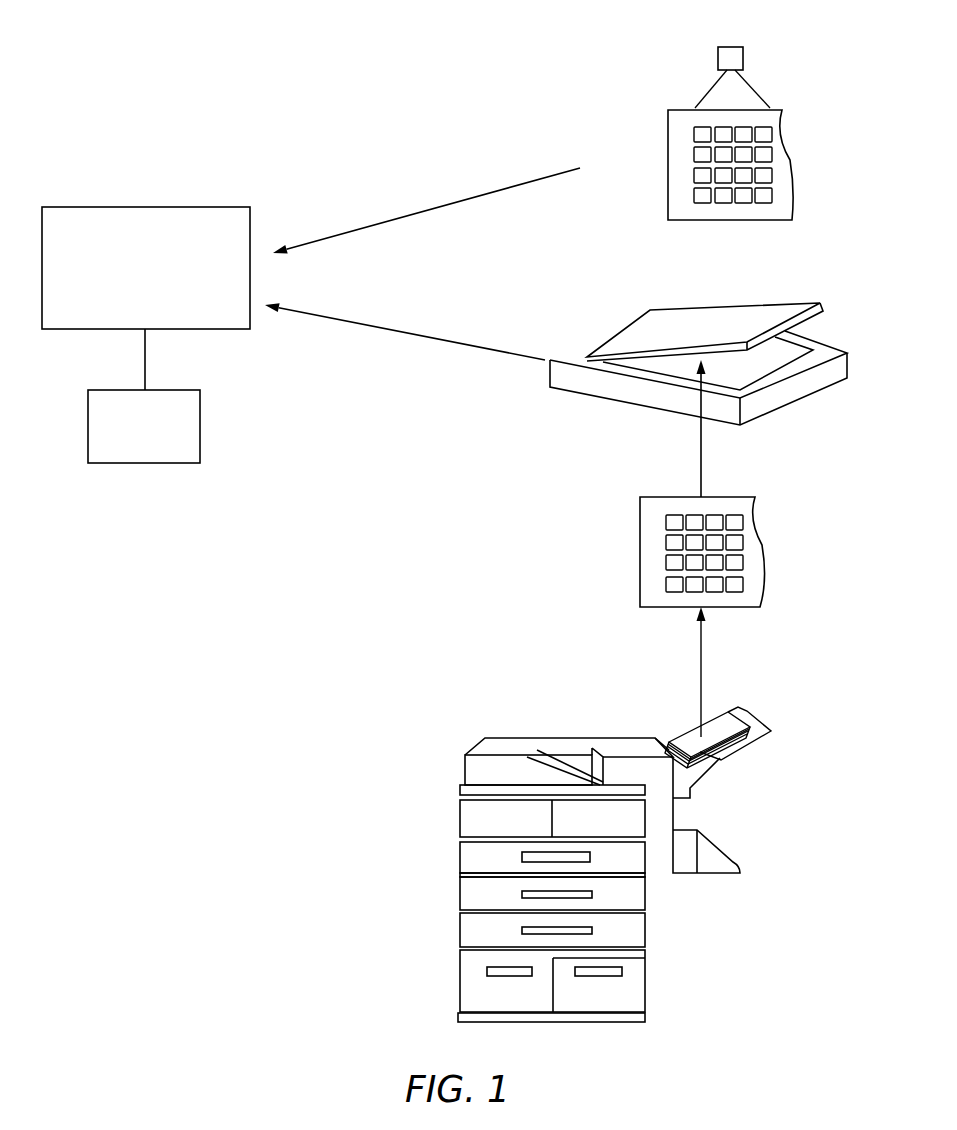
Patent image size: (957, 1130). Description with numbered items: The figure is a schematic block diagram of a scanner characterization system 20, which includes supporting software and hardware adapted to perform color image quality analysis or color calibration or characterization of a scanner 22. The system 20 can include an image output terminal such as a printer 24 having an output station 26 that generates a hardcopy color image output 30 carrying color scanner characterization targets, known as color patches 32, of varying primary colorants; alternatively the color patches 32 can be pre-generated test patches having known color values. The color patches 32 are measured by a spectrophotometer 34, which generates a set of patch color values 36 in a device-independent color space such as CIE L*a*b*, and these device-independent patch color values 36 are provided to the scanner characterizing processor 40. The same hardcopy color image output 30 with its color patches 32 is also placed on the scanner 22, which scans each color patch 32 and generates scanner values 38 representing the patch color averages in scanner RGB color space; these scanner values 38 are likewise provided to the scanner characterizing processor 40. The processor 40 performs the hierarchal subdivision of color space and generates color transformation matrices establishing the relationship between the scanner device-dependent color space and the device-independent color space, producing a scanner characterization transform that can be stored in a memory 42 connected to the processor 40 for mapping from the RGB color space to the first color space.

The scanner characterization system 20 is at (280, 43).
The scanner 22 is at (633, 335).
The printer 24 is at (530, 738).
The output station 26 is at (748, 711).
The hardcopy color image output 30 is at (668, 118).
The color patches 32 is at (674, 130).
The spectrophotometer 34 is at (735, 46).
The patch color values 36 is at (435, 125).
The scanner values 38 is at (410, 447).
The scanner characterizing processor 40 is at (227, 207).
The memory 42 is at (198, 400).